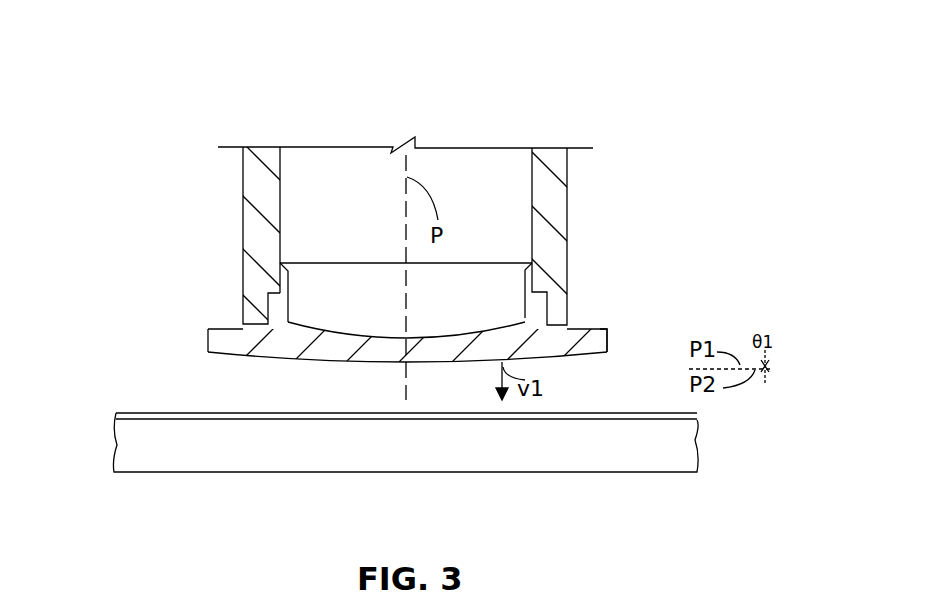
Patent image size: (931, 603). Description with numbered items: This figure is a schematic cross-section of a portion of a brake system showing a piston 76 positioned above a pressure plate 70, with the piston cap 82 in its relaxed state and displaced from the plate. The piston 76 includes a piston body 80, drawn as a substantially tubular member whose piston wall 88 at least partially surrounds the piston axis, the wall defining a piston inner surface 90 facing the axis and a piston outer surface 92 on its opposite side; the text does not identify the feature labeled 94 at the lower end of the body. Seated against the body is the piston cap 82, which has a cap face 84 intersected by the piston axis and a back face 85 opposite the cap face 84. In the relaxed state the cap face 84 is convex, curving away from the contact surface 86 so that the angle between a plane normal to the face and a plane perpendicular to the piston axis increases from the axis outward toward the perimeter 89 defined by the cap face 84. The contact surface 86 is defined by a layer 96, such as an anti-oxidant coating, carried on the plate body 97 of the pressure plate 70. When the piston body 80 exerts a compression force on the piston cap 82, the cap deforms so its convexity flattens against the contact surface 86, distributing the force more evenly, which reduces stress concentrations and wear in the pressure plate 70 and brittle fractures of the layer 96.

The pressure plate 70 is at (393, 48).
The piston 76 is at (96, 147).
The piston body 80 is at (258, 277).
The piston cap 82 is at (250, 340).
The cap face 84 is at (293, 355).
The back face 85 is at (378, 335).
The contact surface 86 is at (152, 412).
The piston wall 88 is at (268, 155).
The perimeter 89 is at (605, 352).
The piston inner surface 90 is at (281, 160).
The piston outer surface 92 is at (242, 160).
The housing groove 94 is at (557, 322).
The layer 96 is at (700, 417).
The plate body 97 is at (210, 463).